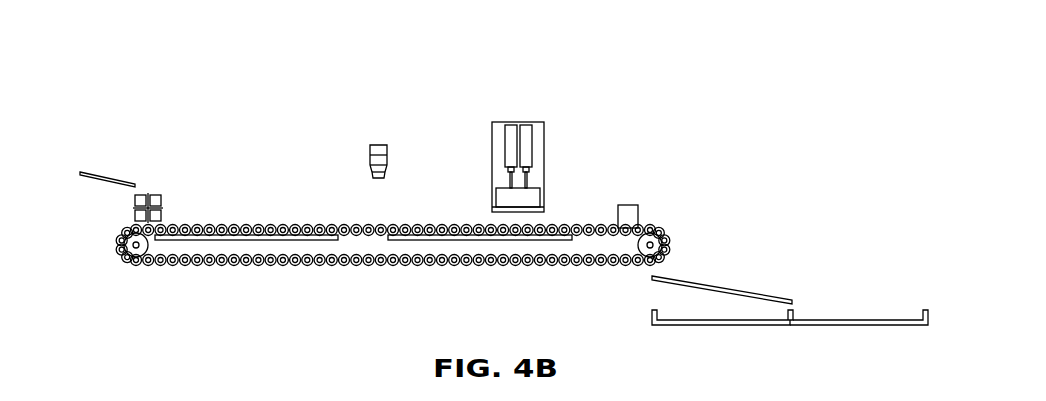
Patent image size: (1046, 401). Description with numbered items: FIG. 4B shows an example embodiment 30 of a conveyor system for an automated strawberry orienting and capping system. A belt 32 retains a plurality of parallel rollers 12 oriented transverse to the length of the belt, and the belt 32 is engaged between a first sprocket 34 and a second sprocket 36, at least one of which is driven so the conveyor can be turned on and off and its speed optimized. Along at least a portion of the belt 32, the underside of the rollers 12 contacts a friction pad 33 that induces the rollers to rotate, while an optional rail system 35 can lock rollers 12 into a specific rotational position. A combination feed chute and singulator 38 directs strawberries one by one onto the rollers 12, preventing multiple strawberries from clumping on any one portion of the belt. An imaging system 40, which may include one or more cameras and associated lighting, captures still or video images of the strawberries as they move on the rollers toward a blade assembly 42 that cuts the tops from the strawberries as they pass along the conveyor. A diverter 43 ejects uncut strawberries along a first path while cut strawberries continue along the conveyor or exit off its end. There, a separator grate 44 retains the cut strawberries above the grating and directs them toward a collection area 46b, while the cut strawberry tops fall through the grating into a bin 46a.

The conveyor system embodiment 30 is at (165, 52).
The parallel rollers 12 is at (195, 223).
The belt 32 is at (289, 212).
The friction pad 33 is at (220, 240).
The first sprocket 34 is at (135, 258).
The rail system 35 is at (453, 240).
The second sprocket 36 is at (662, 228).
The feed chute and/or singulator 38 is at (148, 192).
The imaging system 40 is at (385, 143).
The blade assembly 42 is at (544, 155).
The diverter 43 is at (632, 205).
The separator grate 44 is at (667, 283).
The bin 46a is at (737, 318).
The collection area 46b is at (845, 320).